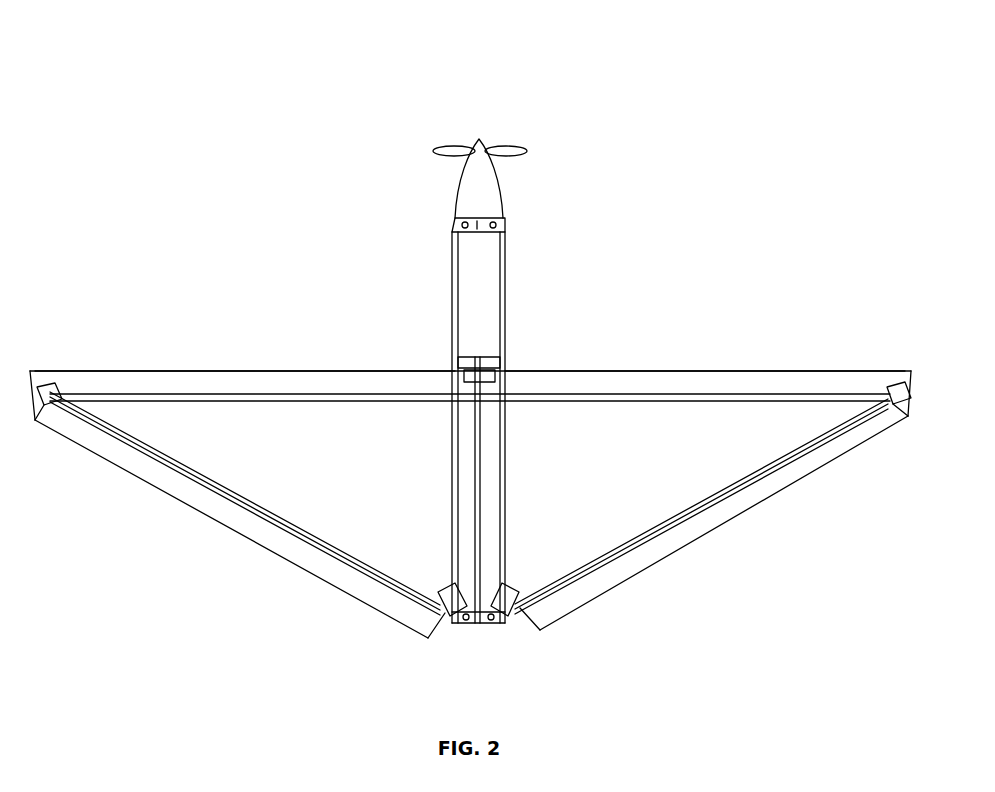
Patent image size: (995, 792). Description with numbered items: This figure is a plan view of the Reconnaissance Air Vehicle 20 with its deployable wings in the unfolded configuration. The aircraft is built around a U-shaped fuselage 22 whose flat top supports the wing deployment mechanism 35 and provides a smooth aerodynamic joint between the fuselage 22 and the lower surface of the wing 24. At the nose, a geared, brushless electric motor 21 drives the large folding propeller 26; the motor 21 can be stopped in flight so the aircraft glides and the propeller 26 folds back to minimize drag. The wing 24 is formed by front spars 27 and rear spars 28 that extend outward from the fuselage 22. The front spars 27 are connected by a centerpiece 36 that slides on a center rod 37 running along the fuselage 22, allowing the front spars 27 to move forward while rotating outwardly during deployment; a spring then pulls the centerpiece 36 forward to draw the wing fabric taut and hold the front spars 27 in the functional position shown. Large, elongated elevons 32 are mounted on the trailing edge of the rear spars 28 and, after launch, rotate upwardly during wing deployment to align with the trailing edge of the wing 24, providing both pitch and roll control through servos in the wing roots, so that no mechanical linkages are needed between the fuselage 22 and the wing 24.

The Reconnaissance Air Vehicle 20 is at (532, 106).
The electric motor 21 is at (487, 192).
The fuselage 22 is at (501, 299).
The wing 24 is at (690, 418).
The folding propeller 26 is at (503, 150).
The front spars 27 is at (268, 385).
The rear spars 28 is at (230, 490).
The elevons 32 is at (278, 540).
The wing deployment mechanism 35 is at (532, 551).
The centerpiece 36 is at (505, 368).
The center rod 37 is at (478, 478).